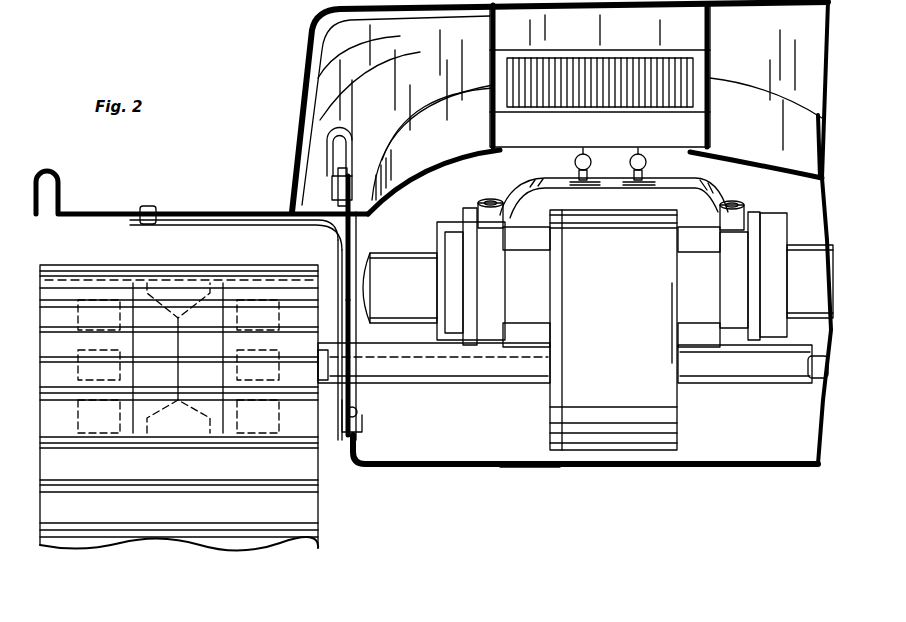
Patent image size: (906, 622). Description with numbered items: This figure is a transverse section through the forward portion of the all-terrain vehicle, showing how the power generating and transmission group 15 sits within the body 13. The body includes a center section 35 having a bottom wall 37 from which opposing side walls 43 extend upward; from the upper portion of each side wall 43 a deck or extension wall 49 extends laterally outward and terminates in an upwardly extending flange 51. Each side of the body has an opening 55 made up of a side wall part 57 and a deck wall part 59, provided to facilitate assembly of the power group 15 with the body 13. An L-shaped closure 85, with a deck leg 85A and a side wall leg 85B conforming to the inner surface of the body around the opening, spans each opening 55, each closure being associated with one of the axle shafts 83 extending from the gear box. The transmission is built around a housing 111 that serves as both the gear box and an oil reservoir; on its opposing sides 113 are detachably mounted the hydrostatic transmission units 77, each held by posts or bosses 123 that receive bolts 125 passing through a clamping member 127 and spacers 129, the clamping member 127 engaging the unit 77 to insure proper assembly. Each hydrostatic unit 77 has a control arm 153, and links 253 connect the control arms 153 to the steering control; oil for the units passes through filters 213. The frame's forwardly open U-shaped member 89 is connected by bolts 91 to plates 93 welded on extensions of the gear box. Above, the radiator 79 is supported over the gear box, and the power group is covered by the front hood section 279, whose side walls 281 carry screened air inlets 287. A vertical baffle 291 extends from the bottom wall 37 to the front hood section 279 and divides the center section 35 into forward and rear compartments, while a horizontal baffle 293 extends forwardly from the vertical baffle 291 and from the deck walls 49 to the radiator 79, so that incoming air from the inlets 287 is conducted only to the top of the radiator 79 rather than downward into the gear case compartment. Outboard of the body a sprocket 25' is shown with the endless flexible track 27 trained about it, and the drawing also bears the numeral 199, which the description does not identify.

The body 13 is at (490, 467).
The power generating and transmission group 15 is at (549, 422).
The rack 25' is at (179, 372).
The endless track 27 is at (240, 517).
The center section 35 is at (440, 468).
The bottom wall 37 is at (530, 468).
The side walls 43 is at (363, 430).
The deck wall 49 is at (114, 208).
The flange 51 is at (58, 170).
The opening 55 is at (283, 226).
The side wall part 57 is at (337, 262).
The deck wall part 59 is at (235, 222).
The hydrostatic transmission unit 77 is at (456, 281).
The radiator 79 is at (672, 77).
The axle shaft 83 is at (390, 388).
The L-shaped closure 85 is at (345, 240).
The deck portion 85A is at (203, 211).
The side wall portion 85B is at (352, 315).
The U-shaped member 89 is at (328, 160).
The bolts 91 is at (332, 186).
The plates 93 is at (357, 244).
The housing 111 is at (688, 437).
The gear box sides 113 is at (548, 403).
The posts or bosses 123 is at (522, 327).
The bolts 125 is at (476, 272).
The clamping member 127 is at (478, 292).
The spacers 129 is at (490, 230).
The control arm 153 is at (652, 190).
The shaft housing 199 is at (452, 385).
The filter 213 is at (415, 300).
The links 253 is at (638, 152).
The front hood section 279 is at (310, 30).
The side walls 281 is at (337, 200).
The air inlet 287 is at (352, 97).
The vertical baffle 291 is at (347, 60).
The horizontal baffle 293 is at (450, 143).